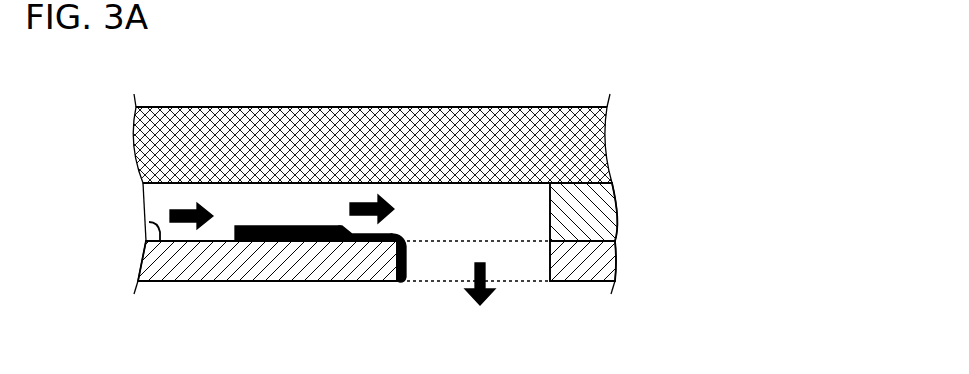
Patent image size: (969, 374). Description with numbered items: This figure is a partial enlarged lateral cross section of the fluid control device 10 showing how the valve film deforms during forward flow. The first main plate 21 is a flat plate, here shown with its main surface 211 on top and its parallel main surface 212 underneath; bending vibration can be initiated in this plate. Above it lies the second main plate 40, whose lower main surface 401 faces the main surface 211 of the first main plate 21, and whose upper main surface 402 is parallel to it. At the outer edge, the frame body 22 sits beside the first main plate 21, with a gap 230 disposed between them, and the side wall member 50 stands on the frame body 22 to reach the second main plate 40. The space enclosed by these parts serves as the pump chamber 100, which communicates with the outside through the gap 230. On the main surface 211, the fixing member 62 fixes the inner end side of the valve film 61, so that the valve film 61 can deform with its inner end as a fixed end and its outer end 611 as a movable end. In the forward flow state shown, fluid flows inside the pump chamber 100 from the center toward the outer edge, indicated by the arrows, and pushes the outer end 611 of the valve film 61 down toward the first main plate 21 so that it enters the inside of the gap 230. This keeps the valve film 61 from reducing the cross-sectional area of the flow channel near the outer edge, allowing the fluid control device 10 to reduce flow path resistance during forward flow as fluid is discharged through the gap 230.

The fluid control device 10 is at (605, 90).
The second main plate 40 is at (608, 146).
The main surface 402 is at (151, 105).
The main surface 401 is at (143, 202).
The pump chamber 100 is at (222, 203).
The first main plate 21 is at (152, 262).
The main surface 211 is at (148, 222).
The main surface 212 is at (157, 283).
The frame body 22 is at (613, 262).
The gap 230 is at (533, 265).
The side wall member 50 is at (612, 210).
The fixing member 62 is at (277, 241).
The valve film 61 is at (355, 241).
The outer end 611 is at (403, 280).